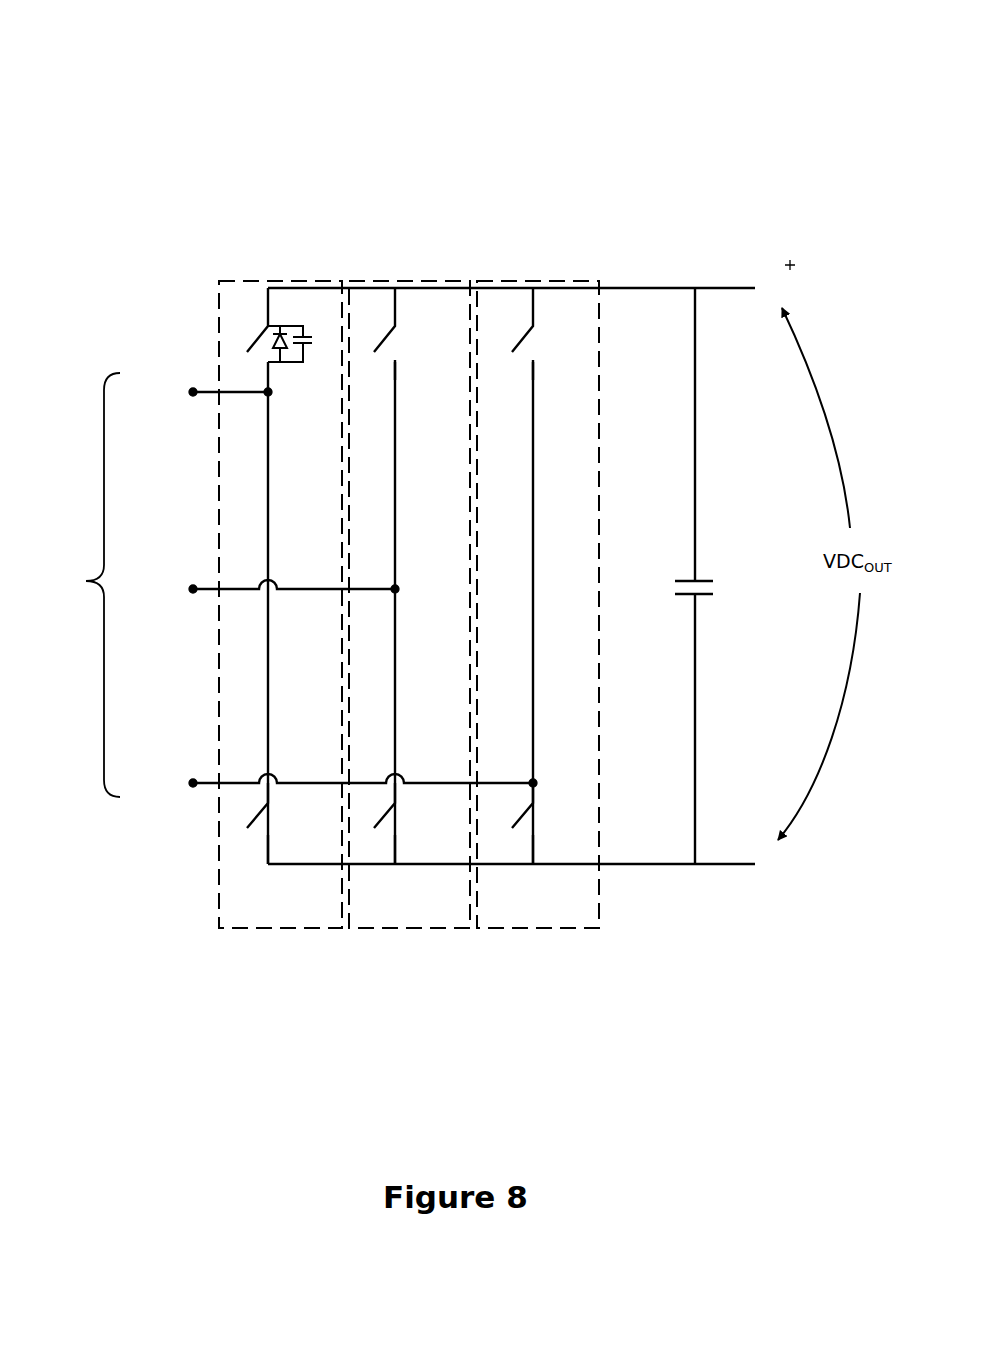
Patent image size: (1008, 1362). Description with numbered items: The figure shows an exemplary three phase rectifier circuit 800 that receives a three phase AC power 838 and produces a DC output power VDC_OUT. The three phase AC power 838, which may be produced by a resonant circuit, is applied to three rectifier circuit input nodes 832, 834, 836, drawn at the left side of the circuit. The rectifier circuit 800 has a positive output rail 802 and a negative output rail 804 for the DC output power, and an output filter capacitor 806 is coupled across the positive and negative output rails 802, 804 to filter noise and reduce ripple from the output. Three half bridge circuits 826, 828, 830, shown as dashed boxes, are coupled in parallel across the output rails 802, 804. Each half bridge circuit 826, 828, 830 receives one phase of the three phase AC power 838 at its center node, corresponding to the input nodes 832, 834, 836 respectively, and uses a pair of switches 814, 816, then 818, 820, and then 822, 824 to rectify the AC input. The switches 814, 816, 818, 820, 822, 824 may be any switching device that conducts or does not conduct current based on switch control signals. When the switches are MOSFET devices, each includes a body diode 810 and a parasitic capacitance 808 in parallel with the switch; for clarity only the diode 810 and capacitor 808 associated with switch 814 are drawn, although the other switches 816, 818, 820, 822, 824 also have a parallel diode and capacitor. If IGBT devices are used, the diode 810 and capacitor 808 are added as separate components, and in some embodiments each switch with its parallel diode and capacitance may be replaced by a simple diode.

The three phase rectifier circuit 800 is at (312, 68).
The positive output rail 802 is at (755, 288).
The negative output rail 804 is at (755, 864).
The output filter capacitor 806 is at (682, 576).
The parasitic capacitance 808 is at (303, 340).
The body diode 810 is at (284, 343).
The switch 814 is at (248, 320).
The switch 816 is at (273, 823).
The switch 818 is at (401, 334).
The switch 820 is at (401, 823).
The switch 822 is at (539, 334).
The switch 824 is at (539, 823).
The half bridge circuit 826 is at (277, 272).
The half bridge circuit 828 is at (405, 272).
The half bridge circuit 830 is at (533, 272).
The rectifier circuit input node 832 is at (203, 392).
The rectifier circuit input node 834 is at (266, 589).
The rectifier circuit input node 836 is at (335, 783).
The three phase AC power 838 is at (78, 585).